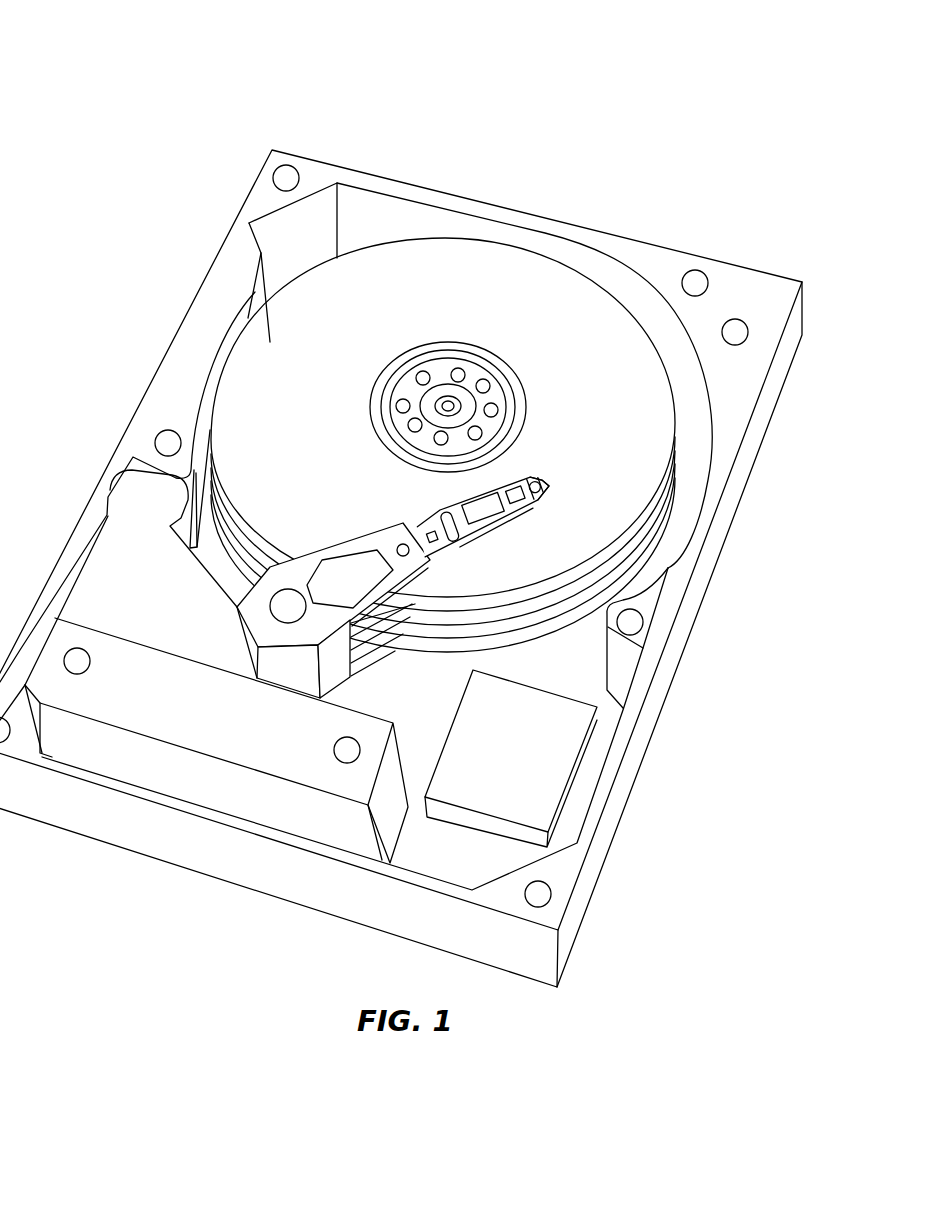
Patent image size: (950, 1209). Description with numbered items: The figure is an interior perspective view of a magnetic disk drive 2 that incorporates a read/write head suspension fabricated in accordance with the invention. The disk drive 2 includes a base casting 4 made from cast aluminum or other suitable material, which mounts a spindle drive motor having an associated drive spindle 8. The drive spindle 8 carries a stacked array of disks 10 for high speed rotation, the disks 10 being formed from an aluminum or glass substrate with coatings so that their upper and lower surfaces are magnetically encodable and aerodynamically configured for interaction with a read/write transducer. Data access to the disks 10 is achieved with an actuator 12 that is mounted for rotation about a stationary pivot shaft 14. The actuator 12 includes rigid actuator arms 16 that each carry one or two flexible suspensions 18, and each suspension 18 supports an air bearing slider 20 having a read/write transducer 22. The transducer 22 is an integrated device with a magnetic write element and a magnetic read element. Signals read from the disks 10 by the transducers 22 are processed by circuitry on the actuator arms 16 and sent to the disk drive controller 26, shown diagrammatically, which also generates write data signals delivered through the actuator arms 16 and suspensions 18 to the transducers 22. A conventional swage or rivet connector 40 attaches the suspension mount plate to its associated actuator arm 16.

The disk drive 2 is at (166, 45).
The base casting 4 is at (770, 412).
The drive spindle 8 is at (447, 402).
The disks 10 is at (270, 342).
The actuator 12 is at (277, 668).
The pivot shaft 14 is at (288, 603).
The actuator arms 16 is at (355, 630).
The suspensions 18 is at (580, 500).
The air bearing slider 20 is at (548, 452).
The read/write transducer 22 is at (548, 480).
The disk drive controller 26 is at (534, 695).
The swage or rivet connector 40 is at (403, 544).